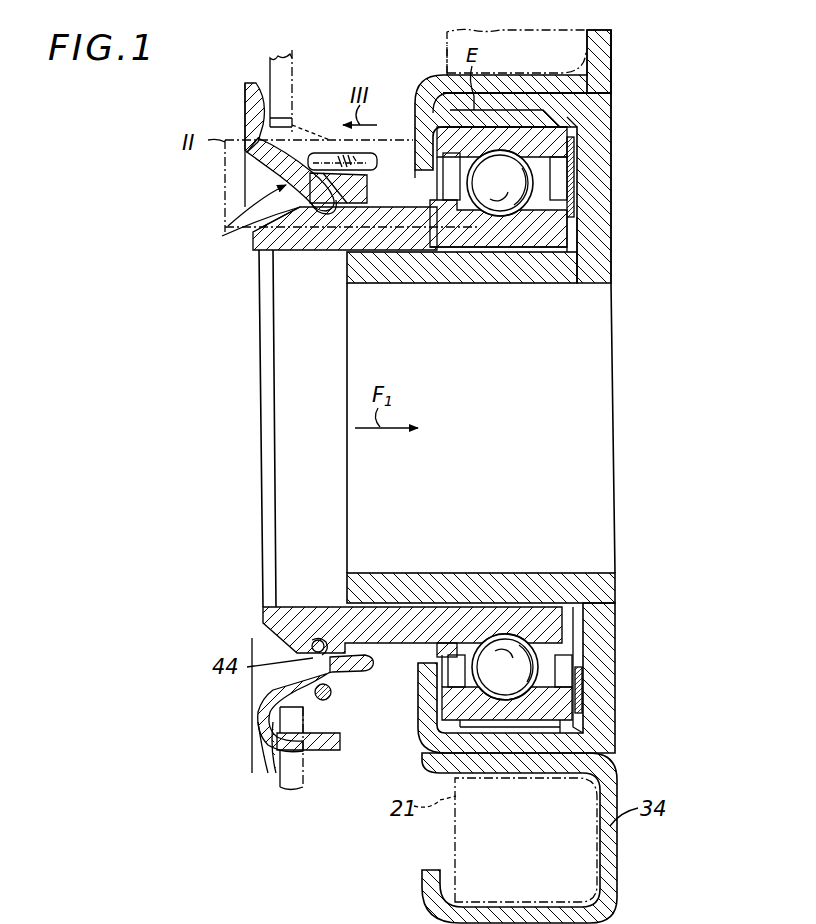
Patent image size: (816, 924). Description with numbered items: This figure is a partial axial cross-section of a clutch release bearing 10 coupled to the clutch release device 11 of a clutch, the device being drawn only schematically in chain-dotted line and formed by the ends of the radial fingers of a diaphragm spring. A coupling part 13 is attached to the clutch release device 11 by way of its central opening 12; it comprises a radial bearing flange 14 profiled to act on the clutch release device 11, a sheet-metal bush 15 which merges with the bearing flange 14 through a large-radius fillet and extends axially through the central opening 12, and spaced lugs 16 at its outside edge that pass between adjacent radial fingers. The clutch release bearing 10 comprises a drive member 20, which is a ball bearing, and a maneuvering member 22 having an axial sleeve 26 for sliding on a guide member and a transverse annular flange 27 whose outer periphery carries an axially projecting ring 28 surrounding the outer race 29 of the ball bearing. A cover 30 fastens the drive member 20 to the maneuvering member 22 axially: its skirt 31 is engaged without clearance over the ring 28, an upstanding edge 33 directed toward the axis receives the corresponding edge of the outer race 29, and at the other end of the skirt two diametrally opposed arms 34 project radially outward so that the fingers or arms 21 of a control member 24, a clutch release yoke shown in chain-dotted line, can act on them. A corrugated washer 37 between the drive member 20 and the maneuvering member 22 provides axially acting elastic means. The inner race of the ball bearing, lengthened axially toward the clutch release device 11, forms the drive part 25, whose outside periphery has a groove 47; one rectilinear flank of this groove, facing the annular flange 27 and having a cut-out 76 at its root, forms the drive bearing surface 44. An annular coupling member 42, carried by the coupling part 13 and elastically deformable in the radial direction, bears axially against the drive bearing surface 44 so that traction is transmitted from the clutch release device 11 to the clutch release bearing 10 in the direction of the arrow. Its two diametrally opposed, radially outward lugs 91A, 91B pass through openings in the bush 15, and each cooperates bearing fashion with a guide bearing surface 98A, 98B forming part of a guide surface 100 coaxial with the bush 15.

The clutch release bearing 10 is at (618, 108).
The clutch release device 11 is at (268, 78).
The central opening 12 is at (273, 133).
The coupling part 13 is at (240, 158).
The bearing flange 14 is at (246, 86).
The bush 15 is at (228, 226).
The lugs 16 is at (303, 751).
The drive member 20 is at (572, 218).
The fingers or arms 21 is at (447, 55).
The maneuvering member 22 is at (545, 391).
The control member 24 is at (525, 28).
The drive part 25 is at (312, 255).
The axial sleeve 26 is at (456, 275).
The annular flange 27 is at (600, 178).
The ring 28 is at (536, 93).
The outer race 29 is at (575, 150).
The cover 30 is at (440, 78).
The skirt 31 is at (506, 93).
The upstanding edge 33 is at (413, 137).
The arms 34 is at (592, 32).
The corrugated washer 37 is at (588, 690).
The annular coupling member 42 is at (320, 650).
The drive bearing surface 44 is at (250, 232).
The groove 47 is at (345, 240).
The cut-out 76 is at (290, 240).
The lug 91A is at (327, 151).
The lug 91B is at (334, 699).
The guide bearing surface 98A is at (350, 162).
The guide bearing surface 98B is at (345, 652).
The guide surface 100 is at (302, 150).